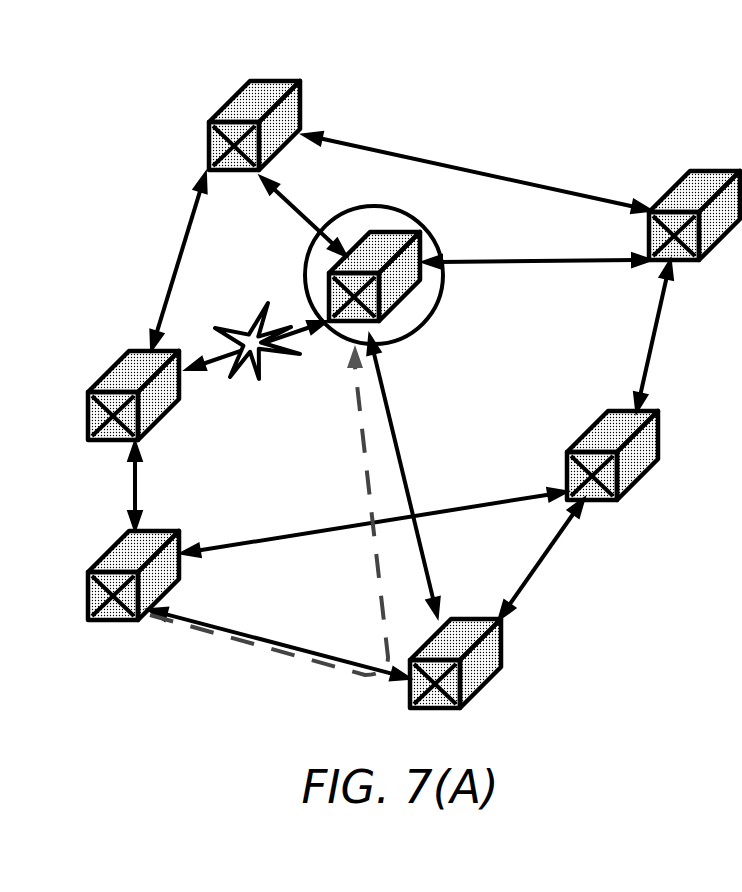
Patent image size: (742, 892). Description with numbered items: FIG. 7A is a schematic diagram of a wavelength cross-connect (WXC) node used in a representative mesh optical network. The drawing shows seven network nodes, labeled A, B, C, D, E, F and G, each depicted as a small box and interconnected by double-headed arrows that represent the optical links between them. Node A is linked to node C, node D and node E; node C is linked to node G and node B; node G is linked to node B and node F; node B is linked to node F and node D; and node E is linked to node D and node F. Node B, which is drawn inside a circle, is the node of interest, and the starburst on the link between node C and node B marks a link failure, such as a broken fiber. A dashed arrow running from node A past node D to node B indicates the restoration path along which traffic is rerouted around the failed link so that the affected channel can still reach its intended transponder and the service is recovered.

The network node A is at (122, 575).
The network node B (failed node) B is at (374, 264).
The network node C is at (123, 395).
The network node D is at (455, 680).
The network node E is at (612, 474).
The network node F is at (694, 200).
The network node G is at (254, 110).